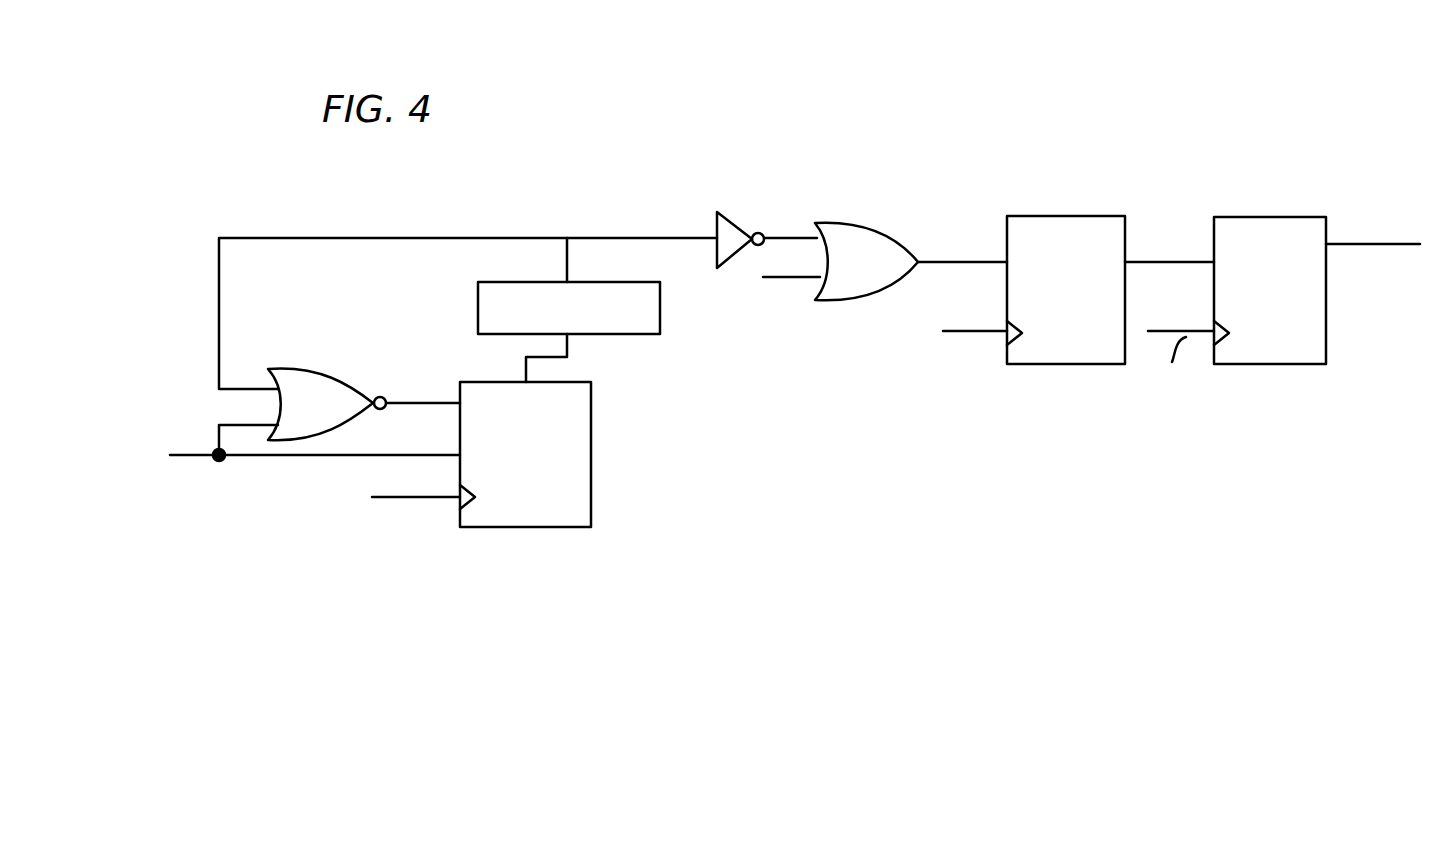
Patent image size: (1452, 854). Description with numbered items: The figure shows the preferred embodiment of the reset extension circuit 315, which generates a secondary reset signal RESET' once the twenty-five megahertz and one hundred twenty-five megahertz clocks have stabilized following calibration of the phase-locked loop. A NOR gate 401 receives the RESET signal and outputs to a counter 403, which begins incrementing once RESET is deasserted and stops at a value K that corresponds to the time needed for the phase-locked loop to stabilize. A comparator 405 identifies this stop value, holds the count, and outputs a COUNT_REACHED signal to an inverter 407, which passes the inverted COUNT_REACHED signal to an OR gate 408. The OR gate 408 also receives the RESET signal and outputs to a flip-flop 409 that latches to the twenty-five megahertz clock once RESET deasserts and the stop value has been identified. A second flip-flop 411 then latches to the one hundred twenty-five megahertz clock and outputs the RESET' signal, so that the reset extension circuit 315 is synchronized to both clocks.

The reset extension circuit 315 is at (1068, 125).
The NOR gate 401 is at (331, 370).
The counter 403 is at (526, 529).
The comparator 405 is at (478, 306).
The inverter 407 is at (733, 222).
The OR gate 408 is at (870, 300).
The flip-flop 409 is at (1065, 365).
The flip-flop 411 is at (1268, 366).